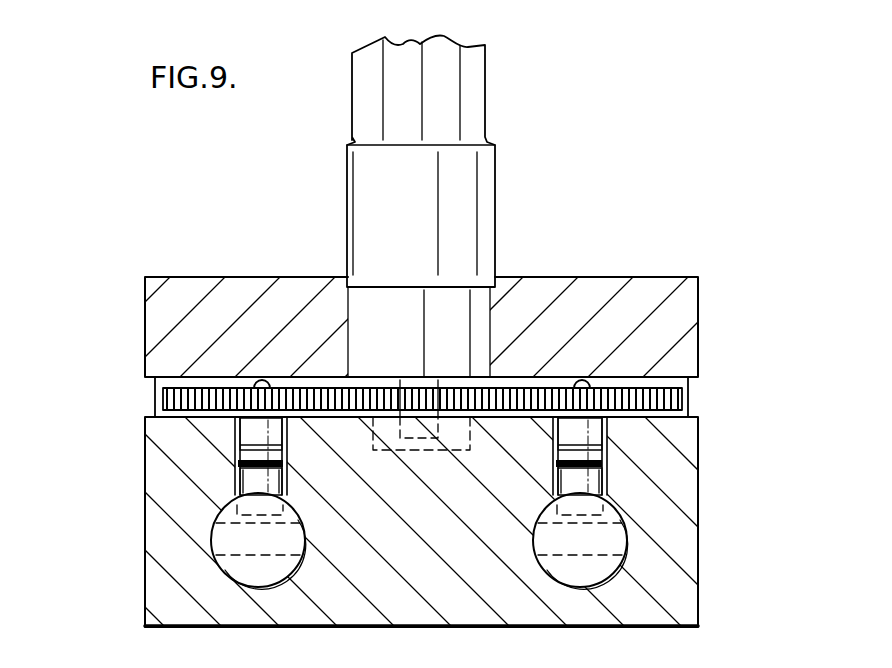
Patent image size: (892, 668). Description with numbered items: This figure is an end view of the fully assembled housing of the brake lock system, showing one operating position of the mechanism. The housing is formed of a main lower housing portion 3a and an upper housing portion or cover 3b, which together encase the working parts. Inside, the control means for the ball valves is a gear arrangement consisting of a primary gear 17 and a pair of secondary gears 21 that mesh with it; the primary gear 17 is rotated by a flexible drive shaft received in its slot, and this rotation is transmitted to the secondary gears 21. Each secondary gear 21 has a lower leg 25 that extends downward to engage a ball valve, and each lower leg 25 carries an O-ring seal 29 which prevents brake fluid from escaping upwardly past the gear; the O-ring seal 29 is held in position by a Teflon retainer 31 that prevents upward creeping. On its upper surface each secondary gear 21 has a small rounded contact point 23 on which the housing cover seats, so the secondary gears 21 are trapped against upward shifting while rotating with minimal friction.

The main lower housing portion 3a is at (680, 283).
The upper housing portion or cover 3b is at (683, 585).
The primary gear 17 is at (365, 418).
The secondary gears 21 is at (165, 402).
The rounded contact point 23 is at (262, 379).
The lower leg 25 is at (284, 478).
The O-ring seals 29 is at (238, 462).
The Teflon retainers 31 is at (284, 445).